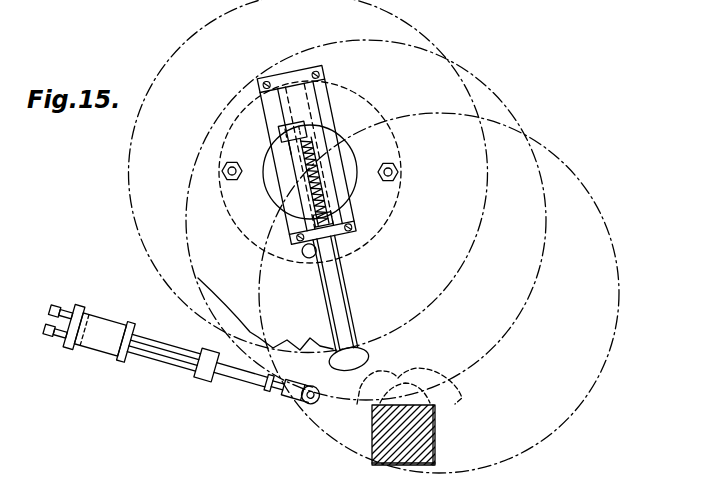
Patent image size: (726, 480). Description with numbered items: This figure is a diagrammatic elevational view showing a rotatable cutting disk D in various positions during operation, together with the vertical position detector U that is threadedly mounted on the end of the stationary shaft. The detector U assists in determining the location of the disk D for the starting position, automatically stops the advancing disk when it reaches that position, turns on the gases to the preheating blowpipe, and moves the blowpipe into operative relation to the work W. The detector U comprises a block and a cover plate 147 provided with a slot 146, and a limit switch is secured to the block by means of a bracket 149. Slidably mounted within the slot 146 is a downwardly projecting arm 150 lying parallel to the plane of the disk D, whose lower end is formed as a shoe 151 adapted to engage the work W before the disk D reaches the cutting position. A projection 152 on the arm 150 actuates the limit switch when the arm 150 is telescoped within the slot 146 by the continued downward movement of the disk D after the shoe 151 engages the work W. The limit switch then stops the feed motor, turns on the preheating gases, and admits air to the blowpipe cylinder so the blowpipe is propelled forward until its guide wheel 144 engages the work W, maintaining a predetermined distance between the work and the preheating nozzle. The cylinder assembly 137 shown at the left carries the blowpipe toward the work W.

The vertical position detector U is at (335, 95).
The disk D is at (527, 302).
The workpiece W is at (432, 433).
The fluid pressure cylinder 137 is at (235, 376).
The guide wheel 144 is at (322, 392).
The slot 146 is at (310, 143).
The cover plate 147 is at (342, 210).
The bracket 149 is at (280, 128).
The arm 150 is at (334, 277).
The shoe 151 is at (367, 353).
The projection 152 is at (304, 144).